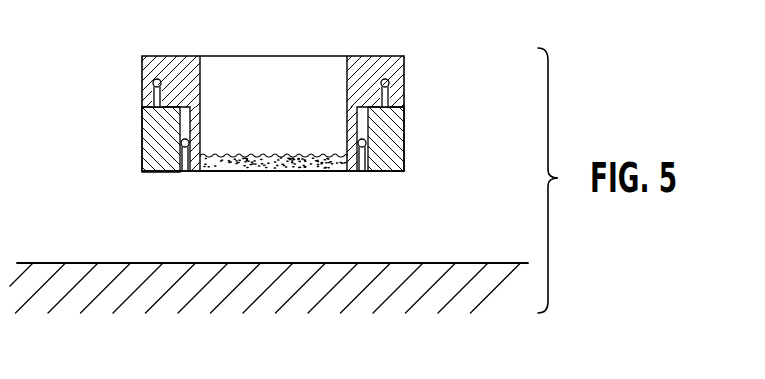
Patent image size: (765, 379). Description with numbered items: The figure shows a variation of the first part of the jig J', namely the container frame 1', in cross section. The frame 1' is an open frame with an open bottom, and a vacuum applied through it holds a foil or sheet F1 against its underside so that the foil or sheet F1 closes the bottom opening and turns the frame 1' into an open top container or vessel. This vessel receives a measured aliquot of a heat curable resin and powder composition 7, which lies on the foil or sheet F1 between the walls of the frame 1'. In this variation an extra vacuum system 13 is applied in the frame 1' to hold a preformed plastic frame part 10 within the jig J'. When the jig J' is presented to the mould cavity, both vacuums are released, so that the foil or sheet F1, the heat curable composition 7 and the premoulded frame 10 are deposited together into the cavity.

The container frame (first part of the jig) 1' is at (240, 112).
The extra vacuum system 13 is at (402, 78).
The preformed plastic frame part 10 is at (387, 143).
The heat curable resin and powder composition 7 is at (302, 171).
The foil or sheet F1 is at (232, 171).
The jig J' is at (326, 167).